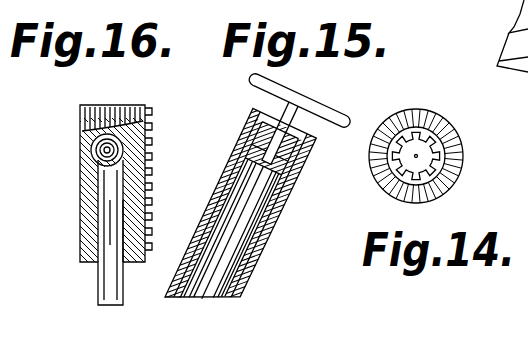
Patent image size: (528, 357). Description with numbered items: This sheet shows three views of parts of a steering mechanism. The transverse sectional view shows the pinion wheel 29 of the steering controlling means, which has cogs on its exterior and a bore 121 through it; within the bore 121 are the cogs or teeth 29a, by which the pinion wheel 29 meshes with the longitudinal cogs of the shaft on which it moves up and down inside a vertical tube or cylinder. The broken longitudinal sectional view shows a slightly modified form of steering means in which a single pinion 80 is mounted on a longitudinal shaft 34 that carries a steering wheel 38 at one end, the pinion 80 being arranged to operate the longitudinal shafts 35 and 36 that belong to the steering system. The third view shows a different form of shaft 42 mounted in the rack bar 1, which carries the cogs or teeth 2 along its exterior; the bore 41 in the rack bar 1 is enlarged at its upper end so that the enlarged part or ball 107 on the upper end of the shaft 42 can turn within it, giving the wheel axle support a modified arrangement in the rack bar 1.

In FIG. 16, the rack bar 1 is at (82, 117).
In FIG. 16, the ball 107 is at (104, 151).
In FIG. 16, the shaft 42 is at (90, 182).
In FIG. 16, the cogs or teeth 2 is at (149, 166).
In FIG. 16, the bore 41 is at (196, 209).
In FIG. 15, the longitudinal shaft 34 is at (252, 126).
In FIG. 15, the longitudinal shaft 35 is at (258, 182).
In FIG. 15, the steering wheel 38 is at (306, 122).
In FIG. 15, the pinion 80 is at (262, 177).
In FIG. 15, the longitudinal shaft 36 is at (263, 206).
In FIG. 14, the pinion wheel 29 is at (397, 188).
In FIG. 14, the cogs or teeth 29a is at (430, 173).
In FIG. 14, the bore 121 is at (421, 160).